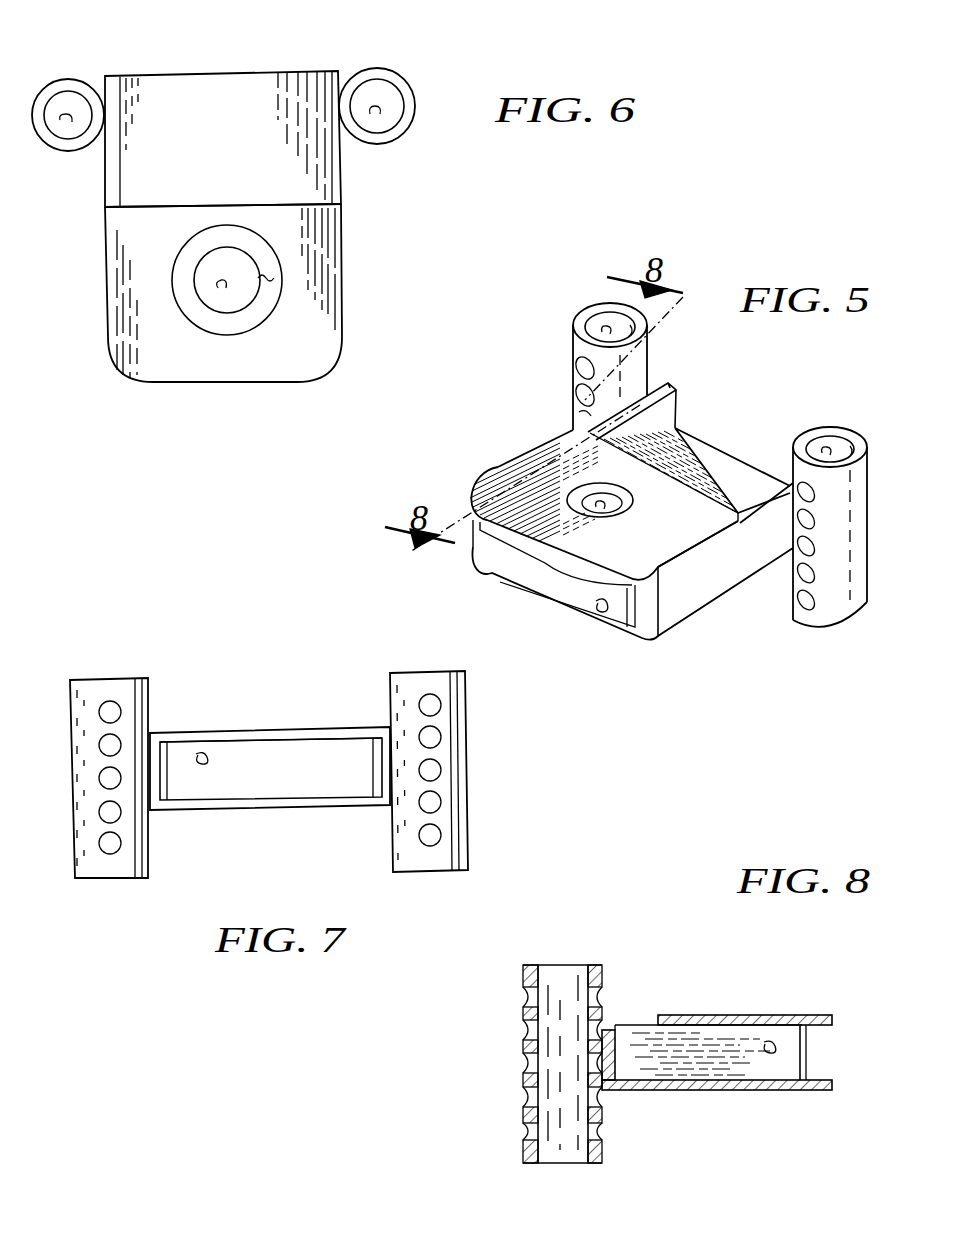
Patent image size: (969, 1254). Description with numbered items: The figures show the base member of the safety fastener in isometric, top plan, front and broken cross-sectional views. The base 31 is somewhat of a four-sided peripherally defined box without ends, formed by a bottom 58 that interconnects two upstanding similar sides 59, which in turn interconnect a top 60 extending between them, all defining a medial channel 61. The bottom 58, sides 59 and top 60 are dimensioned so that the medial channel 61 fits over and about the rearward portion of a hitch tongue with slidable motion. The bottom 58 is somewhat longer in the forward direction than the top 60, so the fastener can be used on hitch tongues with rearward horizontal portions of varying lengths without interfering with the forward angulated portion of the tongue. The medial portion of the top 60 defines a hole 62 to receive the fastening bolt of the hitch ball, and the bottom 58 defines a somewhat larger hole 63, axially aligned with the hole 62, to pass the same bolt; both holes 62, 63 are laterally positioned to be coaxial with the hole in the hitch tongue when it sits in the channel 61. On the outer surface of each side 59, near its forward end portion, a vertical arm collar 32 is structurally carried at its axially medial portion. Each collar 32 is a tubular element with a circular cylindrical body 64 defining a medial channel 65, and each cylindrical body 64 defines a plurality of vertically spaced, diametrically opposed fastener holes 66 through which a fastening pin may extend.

In FIG. 6, the base 31 is at (277, 239).
In FIG. 5, the base 31 is at (614, 549).
In FIG. 7, the base 31 is at (270, 766).
In FIG. 8, the base 31 is at (749, 1046).
In FIG. 6, the vertical arm collar 32 is at (252, 103).
In FIG. 5, the vertical arm collar 32 is at (691, 483).
In FIG. 7, the vertical arm collar 32 is at (335, 731).
In FIG. 8, the vertical arm collar 32 is at (568, 1021).
In FIG. 6, the bottom 58 is at (200, 123).
In FIG. 5, the bottom 58 is at (687, 457).
In FIG. 7, the bottom 58 is at (288, 808).
In FIG. 8, the bottom 58 is at (685, 1092).
In FIG. 6, the side 59 is at (330, 146).
In FIG. 5, the side 59 is at (498, 583).
In FIG. 7, the side 59 is at (385, 752).
In FIG. 8, the side 59 is at (808, 1043).
In FIG. 6, the top 60 is at (202, 360).
In FIG. 5, the top 60 is at (548, 458).
In FIG. 7, the top 60 is at (308, 730).
In FIG. 8, the top 60 is at (715, 1013).
In FIG. 5, the medial channel 61 is at (596, 604).
In FIG. 7, the medial channel 61 is at (207, 758).
In FIG. 8, the medial channel 61 is at (762, 1062).
In FIG. 6, the hole 62 is at (225, 285).
In FIG. 5, the hole 62 is at (597, 500).
In FIG. 6, the hole 63 is at (268, 278).
In FIG. 6, the cylindrical body 64 is at (97, 92).
In FIG. 5, the cylindrical body 64 is at (795, 485).
In FIG. 7, the cylindrical body 64 is at (135, 725).
In FIG. 8, the cylindrical body 64 is at (603, 973).
In FIG. 6, the medial channel 65 is at (78, 122).
In FIG. 5, the medial channel 65 is at (600, 325).
In FIG. 8, the medial channel 65 is at (562, 990).
In FIG. 5, the fastener hole 66 is at (580, 393).
In FIG. 7, the fastener hole 66 is at (110, 812).
In FIG. 8, the fastener hole 66 is at (530, 1130).